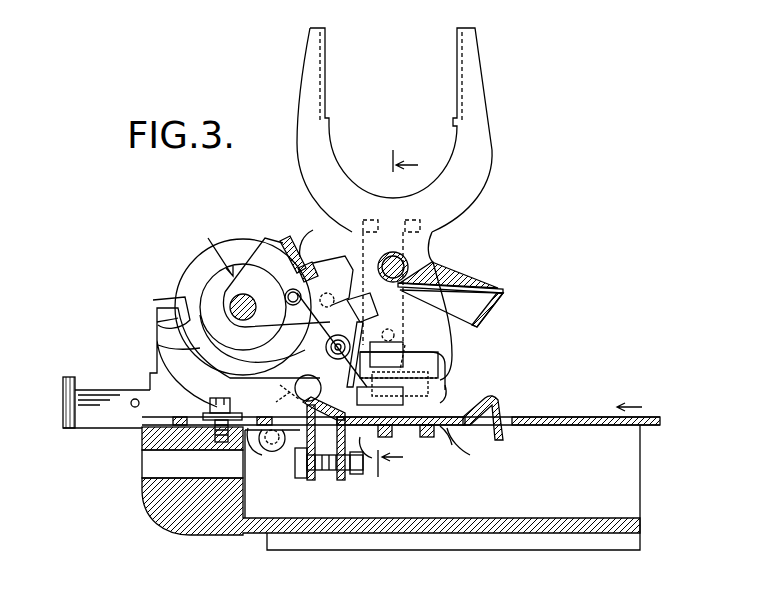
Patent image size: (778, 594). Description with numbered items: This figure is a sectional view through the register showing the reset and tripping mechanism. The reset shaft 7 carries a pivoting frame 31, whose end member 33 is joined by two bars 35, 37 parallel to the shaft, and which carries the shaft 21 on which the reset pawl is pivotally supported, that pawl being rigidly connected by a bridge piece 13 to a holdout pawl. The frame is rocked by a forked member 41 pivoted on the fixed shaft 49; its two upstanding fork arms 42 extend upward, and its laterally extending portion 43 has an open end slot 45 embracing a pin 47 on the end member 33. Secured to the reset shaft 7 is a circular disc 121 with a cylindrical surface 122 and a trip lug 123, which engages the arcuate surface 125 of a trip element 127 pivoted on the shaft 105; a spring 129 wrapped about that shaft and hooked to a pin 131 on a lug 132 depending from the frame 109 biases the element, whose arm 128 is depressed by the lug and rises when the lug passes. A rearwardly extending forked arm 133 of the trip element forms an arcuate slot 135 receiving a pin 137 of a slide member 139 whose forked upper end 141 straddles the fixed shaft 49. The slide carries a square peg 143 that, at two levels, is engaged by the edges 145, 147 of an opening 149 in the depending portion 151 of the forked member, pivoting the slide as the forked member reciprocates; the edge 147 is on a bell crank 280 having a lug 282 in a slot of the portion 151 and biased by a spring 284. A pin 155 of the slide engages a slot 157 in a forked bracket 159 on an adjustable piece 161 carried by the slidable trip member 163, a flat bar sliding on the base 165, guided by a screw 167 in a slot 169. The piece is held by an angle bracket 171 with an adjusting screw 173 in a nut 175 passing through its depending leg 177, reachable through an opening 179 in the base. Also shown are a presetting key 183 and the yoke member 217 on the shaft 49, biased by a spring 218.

The reset shaft 7 is at (230, 308).
The bridge piece 13 is at (313, 226).
The shaft 21 is at (350, 290).
The frame 31 is at (216, 248).
The end member 33 is at (252, 258).
The bar 35 is at (338, 262).
The bar 37 is at (293, 250).
The forked member 41 is at (346, 185).
The fork arm 42 is at (440, 65).
The laterally extending portion 43 is at (312, 262).
The open end slot 45 is at (285, 300).
The pin 47 is at (323, 318).
The fixed shaft 49 is at (406, 263).
The shaft 105 is at (308, 378).
The frame 109 is at (150, 421).
The circular disc 121 is at (210, 272).
The cylindrical surface 122 is at (160, 347).
The trip lug 123 is at (180, 300).
The arcuate surface 125 is at (157, 322).
The trip element 127 is at (235, 365).
The arm 128 is at (185, 385).
The spring 129 is at (277, 388).
The pin 131 is at (272, 450).
The lug 132 is at (280, 452).
The forked arm 133 is at (452, 430).
The arcuate slot 135 is at (437, 381).
The pin 137 is at (440, 400).
The slide member 139 is at (424, 338).
The upper end 141 is at (430, 235).
The square peg 143 is at (407, 340).
The edge 145 is at (470, 372).
The edge 147 is at (388, 340).
The opening 149 is at (437, 352).
The depending portion 151 is at (440, 365).
The pin 155 is at (395, 435).
The slot 157 is at (430, 440).
The forked bracket 159 is at (372, 460).
The piece 161 is at (475, 432).
The slidable trip member 163 is at (558, 415).
The base 165 is at (165, 512).
The screw 167 is at (222, 442).
The slot 169 is at (212, 420).
The angle bracket 171 is at (450, 460).
The adjusting screw 173 is at (330, 470).
The nut 175 is at (356, 474).
The depending leg 177 is at (315, 445).
The opening 179 is at (142, 463).
The key 183 is at (66, 408).
The yoke member 217 is at (470, 290).
The spring 218 is at (495, 300).
The bell crank 280 is at (330, 293).
The lug 282 is at (383, 312).
The spring 284 is at (285, 348).